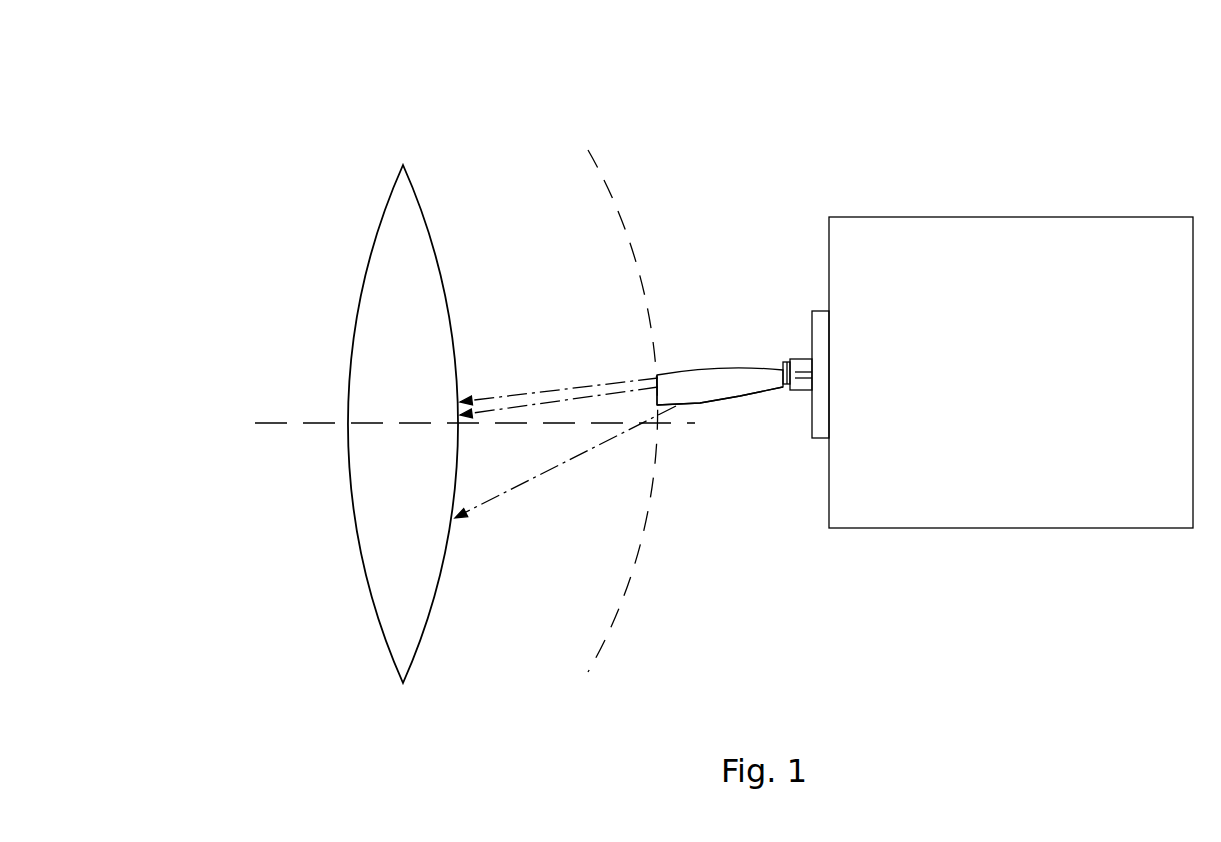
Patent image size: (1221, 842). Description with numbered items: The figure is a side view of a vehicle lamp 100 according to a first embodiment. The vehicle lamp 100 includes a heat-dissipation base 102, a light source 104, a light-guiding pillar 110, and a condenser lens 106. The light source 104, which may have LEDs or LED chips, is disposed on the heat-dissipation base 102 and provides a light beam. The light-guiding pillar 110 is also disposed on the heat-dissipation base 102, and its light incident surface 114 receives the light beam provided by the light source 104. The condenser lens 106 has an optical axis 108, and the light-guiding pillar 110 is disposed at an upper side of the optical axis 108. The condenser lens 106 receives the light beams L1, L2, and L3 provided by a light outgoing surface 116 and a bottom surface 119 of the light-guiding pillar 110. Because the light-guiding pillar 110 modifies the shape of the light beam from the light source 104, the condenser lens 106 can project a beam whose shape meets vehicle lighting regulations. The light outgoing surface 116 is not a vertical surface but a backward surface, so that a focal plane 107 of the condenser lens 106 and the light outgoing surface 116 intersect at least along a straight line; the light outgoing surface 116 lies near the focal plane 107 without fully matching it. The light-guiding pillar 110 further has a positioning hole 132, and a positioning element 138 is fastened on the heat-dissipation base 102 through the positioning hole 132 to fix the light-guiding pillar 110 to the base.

The vehicle lamp 100 is at (180, 66).
The heat-dissipation base 102 is at (1033, 217).
The light source 104 is at (819, 311).
The condenser lens 106 is at (375, 238).
The focal plane 107 is at (590, 152).
The optical axis 108 is at (270, 423).
The light-guiding pillar 110 is at (712, 368).
The light incident surface 114 is at (828, 388).
The light outgoing surface 116 is at (648, 370).
The bottom surface 119 is at (718, 415).
The positioning hole 132 is at (790, 359).
The positioning element 138 is at (789, 391).
The light beam L1 is at (568, 390).
The light beam L2 is at (525, 405).
The light beam L3 is at (521, 486).